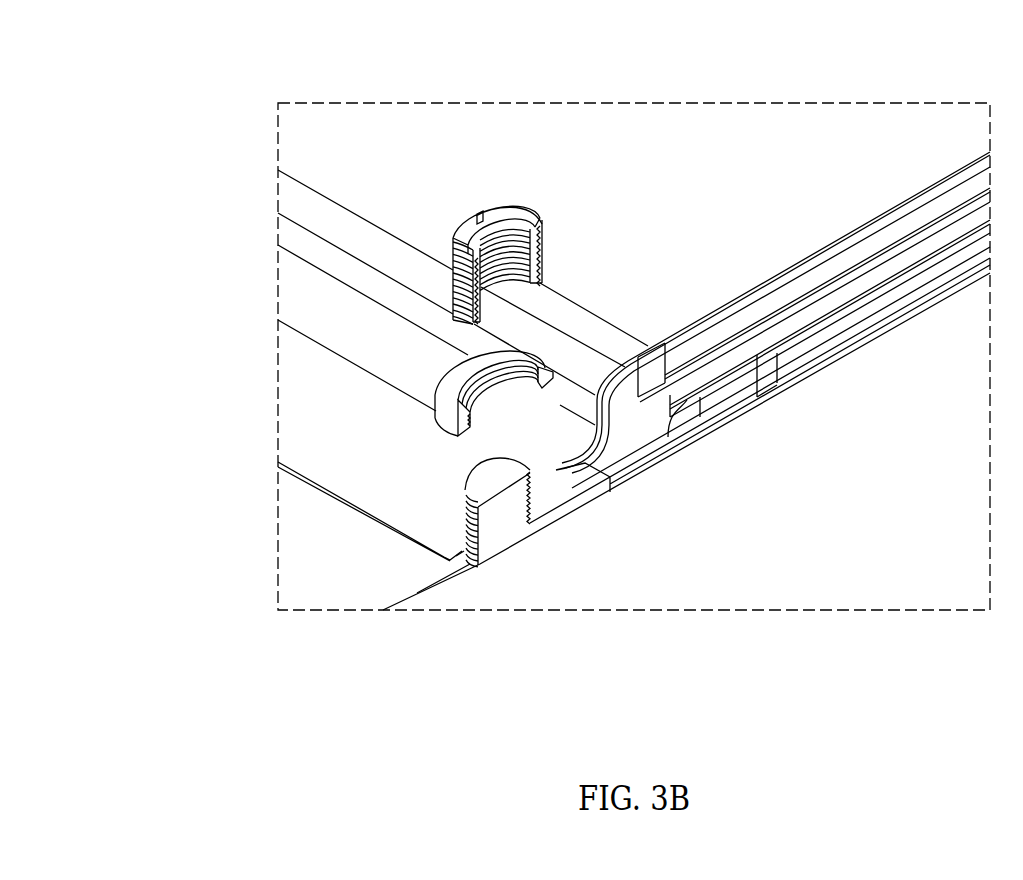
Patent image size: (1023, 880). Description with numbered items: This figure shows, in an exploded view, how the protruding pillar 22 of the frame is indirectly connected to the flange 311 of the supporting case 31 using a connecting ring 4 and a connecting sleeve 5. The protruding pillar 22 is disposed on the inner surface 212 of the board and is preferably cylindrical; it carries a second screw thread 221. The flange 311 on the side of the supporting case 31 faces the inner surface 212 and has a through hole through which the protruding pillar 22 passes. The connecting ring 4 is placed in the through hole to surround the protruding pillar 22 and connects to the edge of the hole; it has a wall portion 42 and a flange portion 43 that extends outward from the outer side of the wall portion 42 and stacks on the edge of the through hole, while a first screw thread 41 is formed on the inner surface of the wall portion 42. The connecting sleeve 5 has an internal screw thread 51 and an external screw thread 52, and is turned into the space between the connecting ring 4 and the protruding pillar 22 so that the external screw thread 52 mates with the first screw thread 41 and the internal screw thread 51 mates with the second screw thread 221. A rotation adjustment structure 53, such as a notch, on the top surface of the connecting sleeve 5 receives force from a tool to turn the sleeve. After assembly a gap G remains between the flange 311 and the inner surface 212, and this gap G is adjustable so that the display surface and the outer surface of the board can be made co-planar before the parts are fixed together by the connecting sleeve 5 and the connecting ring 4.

The supporting case 31 is at (716, 197).
The flange 311 is at (383, 557).
The gap G is at (460, 557).
The protruding pillar 22 is at (716, 481).
The second screw thread 221 is at (532, 512).
The inner surface 212 is at (465, 492).
The connecting ring 4 is at (360, 478).
The first screw thread 41 is at (458, 437).
The wall portion 42 is at (436, 412).
The flange portion 43 is at (458, 418).
The connecting sleeve 5 is at (518, 166).
The internal screw thread 51 is at (527, 232).
The external screw thread 52 is at (540, 236).
The rotation adjustment structure 53 is at (483, 218).